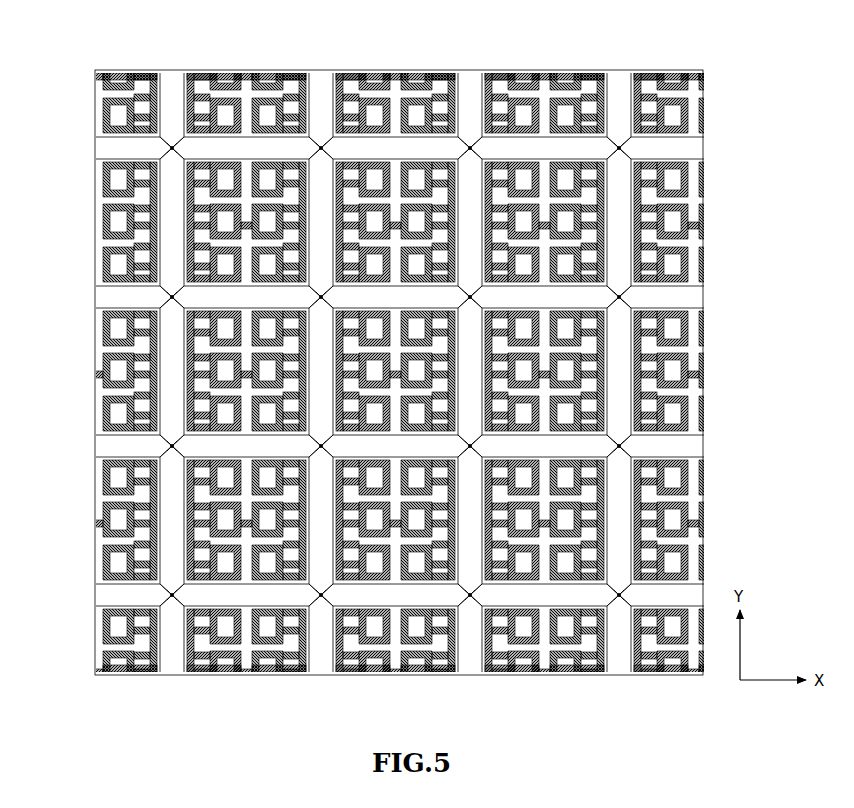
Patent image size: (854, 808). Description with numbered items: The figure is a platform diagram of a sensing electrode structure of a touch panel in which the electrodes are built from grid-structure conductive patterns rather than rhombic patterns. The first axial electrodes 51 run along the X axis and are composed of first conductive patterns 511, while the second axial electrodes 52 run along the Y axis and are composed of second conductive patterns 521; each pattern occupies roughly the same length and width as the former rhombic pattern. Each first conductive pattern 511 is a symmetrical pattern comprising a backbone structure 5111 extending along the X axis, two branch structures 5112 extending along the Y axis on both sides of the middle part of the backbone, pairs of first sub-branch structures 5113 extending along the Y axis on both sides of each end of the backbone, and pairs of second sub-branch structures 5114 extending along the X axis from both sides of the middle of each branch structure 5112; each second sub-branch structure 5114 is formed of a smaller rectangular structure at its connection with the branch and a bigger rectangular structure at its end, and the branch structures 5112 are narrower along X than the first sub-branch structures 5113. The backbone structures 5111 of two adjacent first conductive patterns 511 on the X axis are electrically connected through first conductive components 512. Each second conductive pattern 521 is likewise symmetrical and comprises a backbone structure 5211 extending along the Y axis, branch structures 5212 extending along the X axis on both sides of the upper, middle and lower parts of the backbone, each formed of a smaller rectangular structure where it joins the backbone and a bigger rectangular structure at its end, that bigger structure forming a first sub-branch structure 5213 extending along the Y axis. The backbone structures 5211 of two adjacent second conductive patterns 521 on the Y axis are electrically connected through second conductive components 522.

The first axial electrode 51 is at (101, 442).
The second axial electrode 52 is at (138, 68).
The first conductive pattern 511 is at (231, 156).
The backbone structure 5111 is at (226, 100).
The branch structure 5112 is at (246, 112).
The first sub-branch structure 5113 is at (186, 134).
The second sub-branch structure 5114 is at (322, 134).
The first conductive component 512 is at (168, 147).
The second conductive pattern 521 is at (101, 222).
The backbone structure 5211 is at (100, 271).
The branch structure 5212 is at (117, 262).
The first sub-branch structure 5213 is at (98, 232).
The second conductive component 522 is at (323, 146).